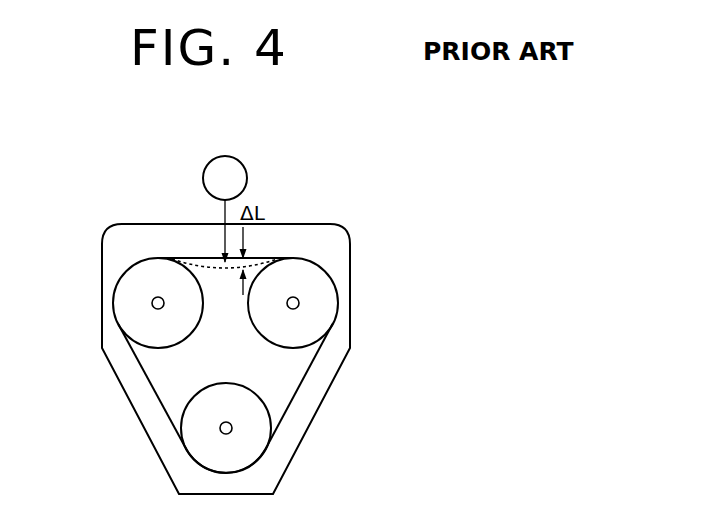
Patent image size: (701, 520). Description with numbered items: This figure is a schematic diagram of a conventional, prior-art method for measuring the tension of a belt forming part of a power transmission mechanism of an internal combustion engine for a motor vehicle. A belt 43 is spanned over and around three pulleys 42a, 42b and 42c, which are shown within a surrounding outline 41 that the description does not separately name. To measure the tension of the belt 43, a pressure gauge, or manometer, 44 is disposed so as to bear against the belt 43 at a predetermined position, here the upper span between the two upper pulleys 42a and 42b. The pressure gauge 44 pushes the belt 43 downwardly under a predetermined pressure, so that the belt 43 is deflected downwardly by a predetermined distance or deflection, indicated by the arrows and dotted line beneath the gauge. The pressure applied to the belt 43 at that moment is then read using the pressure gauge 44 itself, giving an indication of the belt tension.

The housing 41 is at (320, 225).
The pulley 42a is at (112, 298).
The pulley 42b is at (339, 301).
The pulley 42c is at (260, 455).
The belt 43 is at (305, 375).
The pressure gauge 44 is at (247, 173).